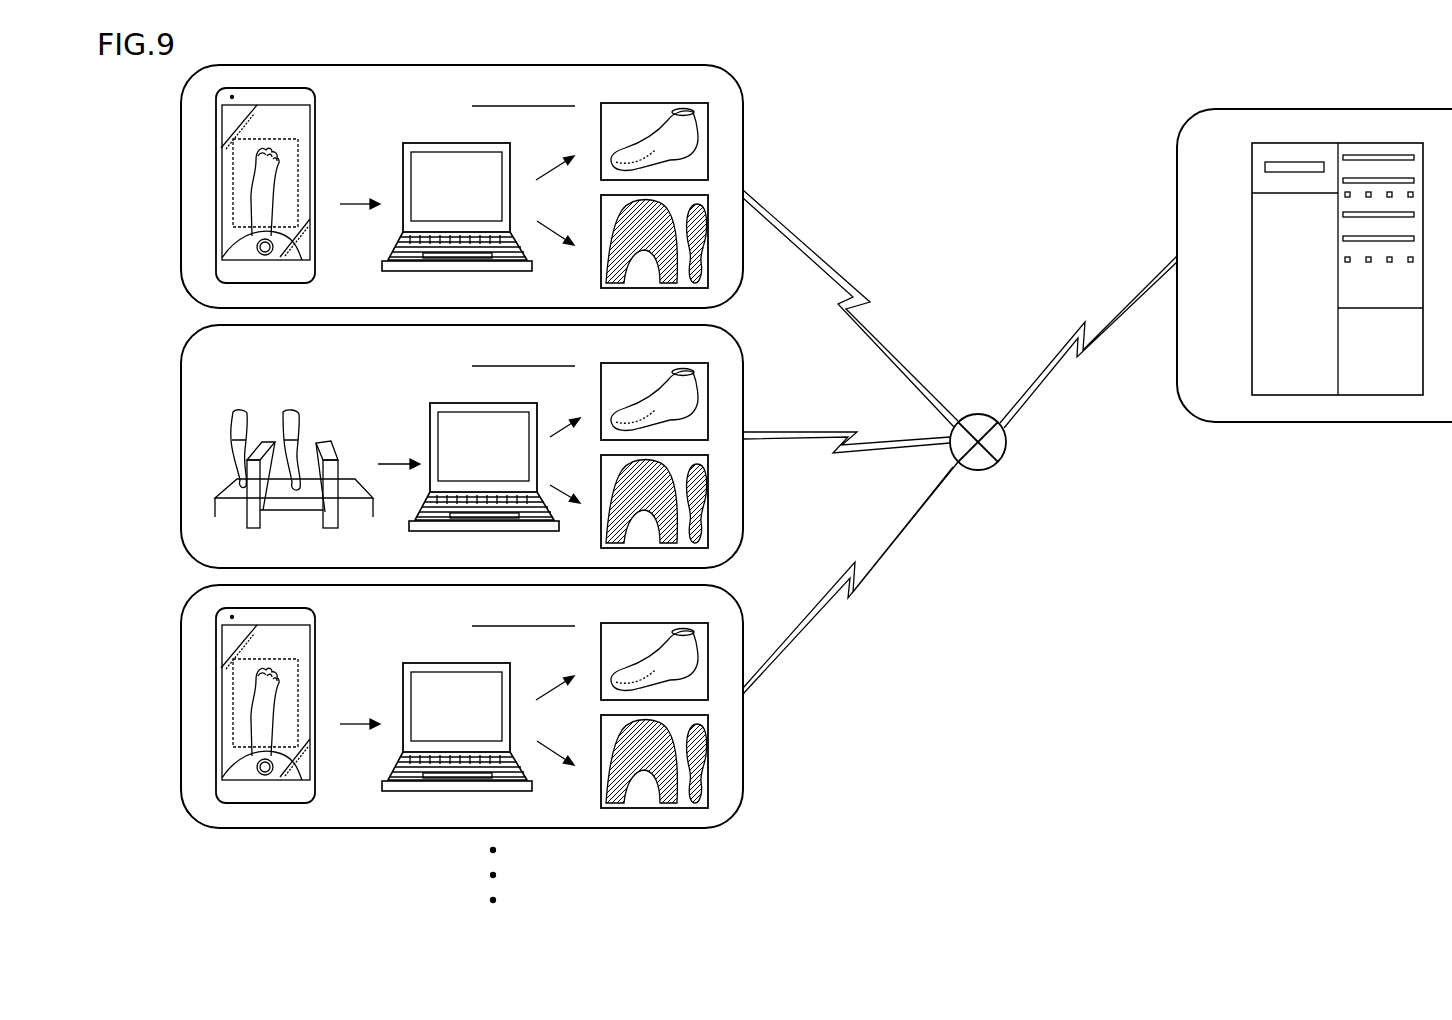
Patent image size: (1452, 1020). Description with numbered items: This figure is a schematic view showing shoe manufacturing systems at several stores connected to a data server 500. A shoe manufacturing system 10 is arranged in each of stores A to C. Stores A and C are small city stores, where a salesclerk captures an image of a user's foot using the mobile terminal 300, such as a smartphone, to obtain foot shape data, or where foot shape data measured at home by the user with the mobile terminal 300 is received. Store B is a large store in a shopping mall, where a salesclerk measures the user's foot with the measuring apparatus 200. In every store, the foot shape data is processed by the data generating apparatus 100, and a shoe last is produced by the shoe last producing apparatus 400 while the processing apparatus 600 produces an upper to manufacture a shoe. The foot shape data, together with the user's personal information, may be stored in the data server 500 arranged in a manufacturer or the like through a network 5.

The shoe manufacturing system 10 is at (745, 108).
The mobile terminal 300 is at (305, 95).
The measuring apparatus 200 is at (318, 452).
The data generating apparatus 100 is at (495, 147).
The shoe last producing apparatus 400 is at (627, 105).
The processing apparatus 600 is at (612, 290).
The network 5 is at (978, 470).
The data server 500 is at (1252, 226).